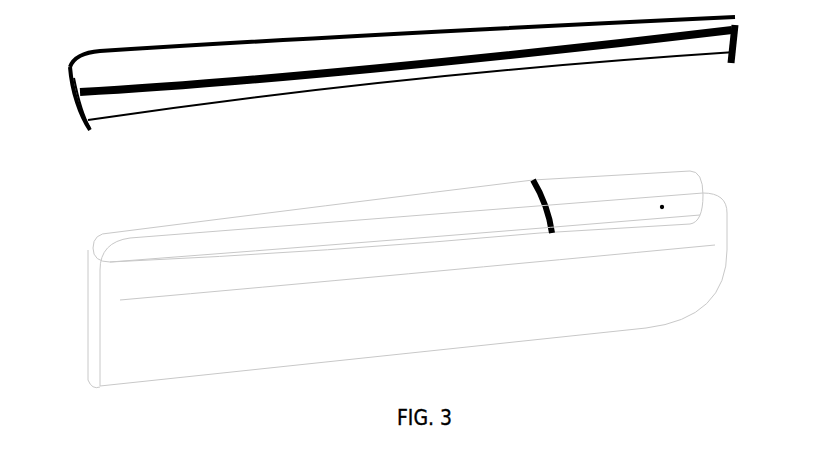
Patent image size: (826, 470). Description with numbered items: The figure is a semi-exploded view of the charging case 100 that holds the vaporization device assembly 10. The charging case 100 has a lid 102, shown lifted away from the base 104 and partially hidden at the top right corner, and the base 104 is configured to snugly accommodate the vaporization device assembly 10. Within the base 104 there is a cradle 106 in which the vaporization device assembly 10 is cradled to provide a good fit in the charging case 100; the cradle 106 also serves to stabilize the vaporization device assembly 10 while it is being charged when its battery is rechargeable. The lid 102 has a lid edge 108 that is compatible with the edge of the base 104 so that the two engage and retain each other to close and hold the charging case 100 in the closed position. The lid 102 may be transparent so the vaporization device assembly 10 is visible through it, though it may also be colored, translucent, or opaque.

The vaporization device assembly 10 is at (340, 235).
The charging case 100 is at (600, 128).
The lid 102 is at (185, 67).
The base 104 is at (516, 334).
The cradle 106 is at (621, 255).
The lid edge 108 is at (455, 100).